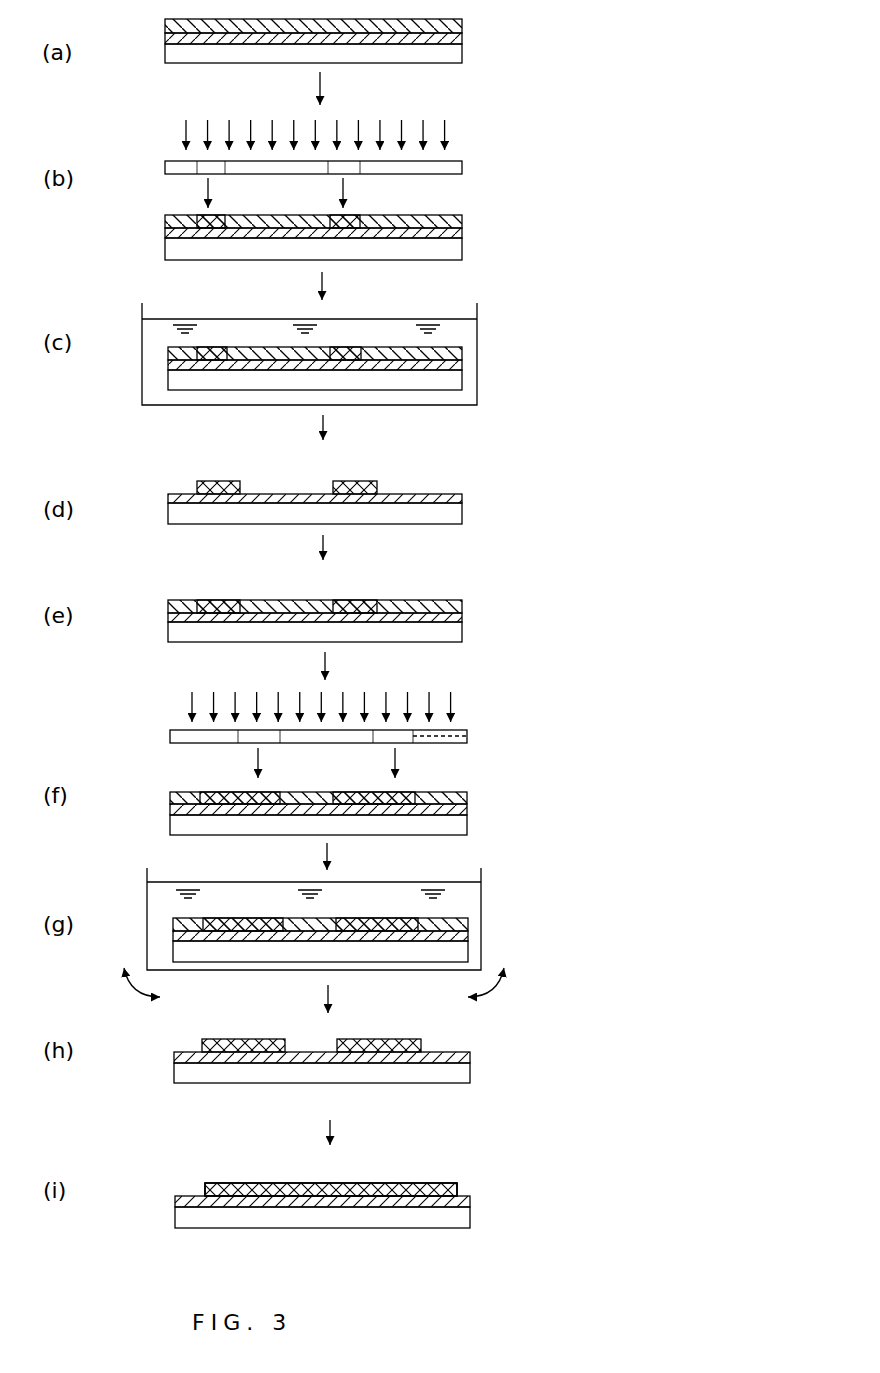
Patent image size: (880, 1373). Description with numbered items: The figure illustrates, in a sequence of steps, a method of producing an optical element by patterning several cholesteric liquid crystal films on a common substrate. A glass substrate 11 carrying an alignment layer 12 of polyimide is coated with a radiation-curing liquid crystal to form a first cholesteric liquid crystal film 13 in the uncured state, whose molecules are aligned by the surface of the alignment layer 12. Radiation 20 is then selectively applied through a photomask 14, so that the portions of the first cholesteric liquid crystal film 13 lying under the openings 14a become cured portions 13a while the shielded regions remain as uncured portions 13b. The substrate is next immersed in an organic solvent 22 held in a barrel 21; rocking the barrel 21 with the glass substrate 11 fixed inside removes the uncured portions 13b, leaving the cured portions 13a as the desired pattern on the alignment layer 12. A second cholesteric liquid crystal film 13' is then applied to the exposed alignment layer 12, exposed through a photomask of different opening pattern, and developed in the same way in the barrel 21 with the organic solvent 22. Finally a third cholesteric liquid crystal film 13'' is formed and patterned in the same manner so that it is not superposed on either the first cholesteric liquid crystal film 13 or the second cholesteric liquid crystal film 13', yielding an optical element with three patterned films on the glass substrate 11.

The glass substrate 11 is at (462, 56).
The alignment layer 12 is at (462, 40).
The first cholesteric liquid crystal film 13 is at (354, 637).
The cured portions 13a is at (200, 215).
The uncured portions 13b is at (178, 215).
The second cholesteric liquid crystal film 13' is at (331, 1225).
The third cholesteric liquid crystal film 13'' is at (336, 1161).
The photomask 14 is at (462, 165).
The openings 14a is at (366, 176).
The radiation 20 is at (447, 130).
The barrel 21 is at (478, 312).
The organic solvent 22 is at (458, 328).